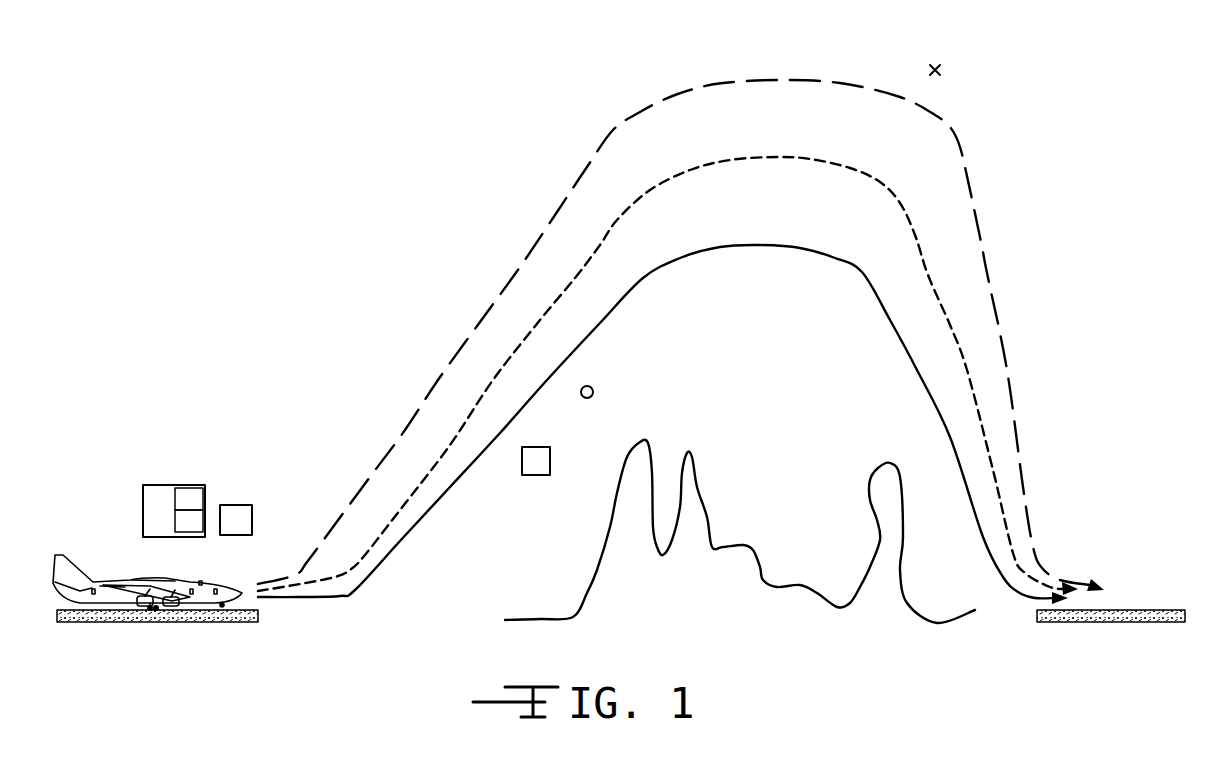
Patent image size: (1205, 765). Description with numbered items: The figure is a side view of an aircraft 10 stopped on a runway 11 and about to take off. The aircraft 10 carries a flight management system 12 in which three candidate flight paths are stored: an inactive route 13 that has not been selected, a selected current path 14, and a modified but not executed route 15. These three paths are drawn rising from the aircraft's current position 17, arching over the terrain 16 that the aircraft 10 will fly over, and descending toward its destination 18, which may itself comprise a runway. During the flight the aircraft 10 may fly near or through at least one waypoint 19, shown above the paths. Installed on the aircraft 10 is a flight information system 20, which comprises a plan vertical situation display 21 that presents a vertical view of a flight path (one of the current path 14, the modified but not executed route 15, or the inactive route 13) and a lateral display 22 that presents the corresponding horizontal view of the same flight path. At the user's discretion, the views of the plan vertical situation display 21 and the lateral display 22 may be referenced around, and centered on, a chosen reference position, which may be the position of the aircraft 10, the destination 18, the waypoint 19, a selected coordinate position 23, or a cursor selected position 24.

The aircraft 10 is at (110, 560).
The runway 11 is at (218, 623).
The flight management system 12 is at (224, 585).
The inactive route 13 is at (611, 228).
The selected current path 14 is at (706, 250).
The modified but not executed route 15 is at (584, 170).
The terrain 16 is at (700, 486).
The current position 17 is at (243, 590).
The destination 18 is at (1125, 607).
The waypoint 19 is at (944, 68).
The flight information system 20 is at (182, 535).
The plan vertical situation display 21 is at (189, 500).
The lateral display 22 is at (189, 522).
The selected coordinate position 23 is at (592, 386).
The cursor selected position 24 is at (538, 475).